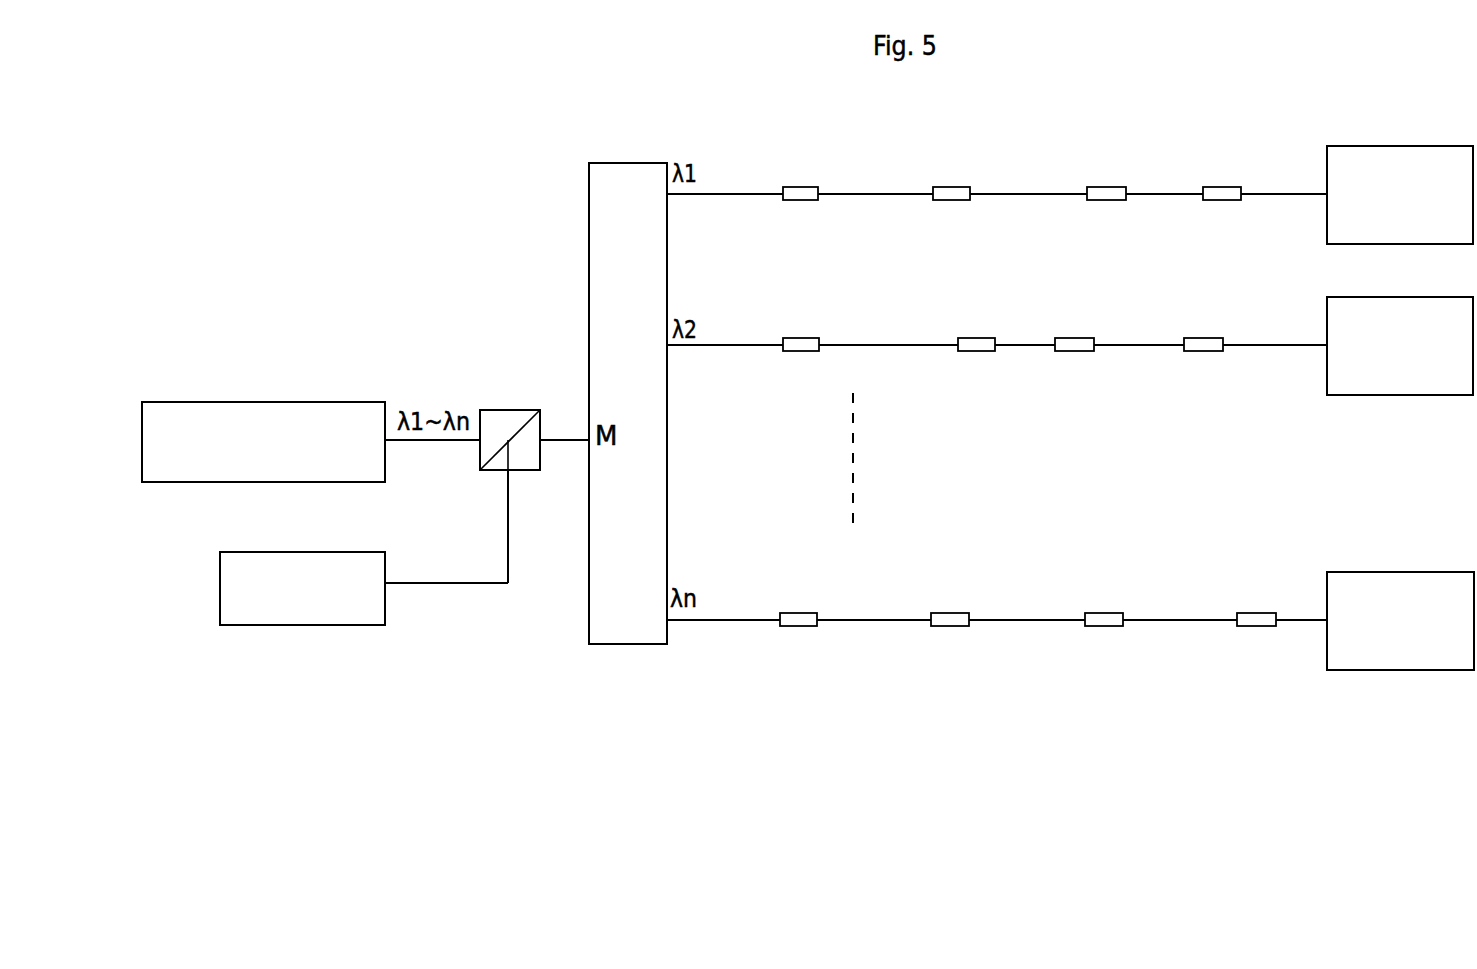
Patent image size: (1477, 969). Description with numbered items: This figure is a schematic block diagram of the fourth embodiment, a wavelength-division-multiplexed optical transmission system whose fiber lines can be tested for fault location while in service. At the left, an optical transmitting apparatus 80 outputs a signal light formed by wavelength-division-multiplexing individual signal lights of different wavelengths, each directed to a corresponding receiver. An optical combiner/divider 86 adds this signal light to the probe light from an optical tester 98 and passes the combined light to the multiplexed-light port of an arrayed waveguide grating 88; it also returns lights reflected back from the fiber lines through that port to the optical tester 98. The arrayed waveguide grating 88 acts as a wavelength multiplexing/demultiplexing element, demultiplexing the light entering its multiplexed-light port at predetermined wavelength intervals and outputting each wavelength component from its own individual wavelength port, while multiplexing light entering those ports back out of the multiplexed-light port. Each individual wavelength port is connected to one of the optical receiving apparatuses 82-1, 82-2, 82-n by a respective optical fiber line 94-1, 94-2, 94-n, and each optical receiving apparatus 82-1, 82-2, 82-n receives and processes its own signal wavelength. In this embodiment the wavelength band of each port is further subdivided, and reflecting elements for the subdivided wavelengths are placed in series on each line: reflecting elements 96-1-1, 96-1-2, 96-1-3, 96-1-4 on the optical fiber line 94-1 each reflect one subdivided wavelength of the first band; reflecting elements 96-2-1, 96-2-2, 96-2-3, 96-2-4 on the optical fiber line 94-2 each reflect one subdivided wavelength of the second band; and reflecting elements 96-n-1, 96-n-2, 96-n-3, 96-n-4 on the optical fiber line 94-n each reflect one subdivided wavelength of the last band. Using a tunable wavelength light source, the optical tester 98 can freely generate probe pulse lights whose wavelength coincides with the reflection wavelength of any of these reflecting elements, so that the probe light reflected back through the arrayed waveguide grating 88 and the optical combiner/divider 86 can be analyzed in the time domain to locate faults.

The optical transmitting apparatus 80 is at (327, 410).
The optical combiner/divider 86 is at (510, 417).
The arrayed waveguide grating (AWG) 88 is at (596, 187).
The optical tester 98 is at (352, 613).
The optical receiving apparatus 82-1 is at (1397, 147).
The optical receiving apparatus 82-2 is at (1402, 303).
The optical receiving apparatus 82-n is at (1403, 580).
The optical fiber line 94-1 is at (1038, 192).
The optical fiber line 94-2 is at (1030, 345).
The optical fiber line 94-n is at (1028, 619).
The reflecting element 96-1-1 is at (798, 187).
The reflecting element 96-1-2 is at (950, 187).
The reflecting element 96-1-3 is at (1108, 188).
The reflecting element 96-1-4 is at (1275, 162).
The reflecting element 96-2-1 is at (802, 338).
The reflecting element 96-2-2 is at (965, 338).
The reflecting element 96-2-3 is at (1080, 339).
The reflecting element 96-2-4 is at (1210, 339).
The reflecting element 96-n-1 is at (800, 613).
The reflecting element 96-n-2 is at (948, 615).
The reflecting element 96-n-3 is at (1107, 615).
The reflecting element 96-n-4 is at (1258, 615).